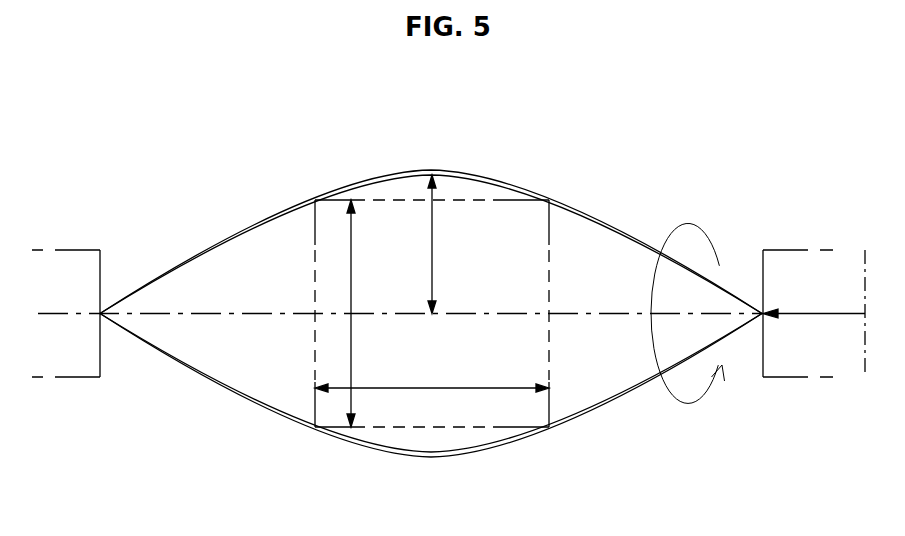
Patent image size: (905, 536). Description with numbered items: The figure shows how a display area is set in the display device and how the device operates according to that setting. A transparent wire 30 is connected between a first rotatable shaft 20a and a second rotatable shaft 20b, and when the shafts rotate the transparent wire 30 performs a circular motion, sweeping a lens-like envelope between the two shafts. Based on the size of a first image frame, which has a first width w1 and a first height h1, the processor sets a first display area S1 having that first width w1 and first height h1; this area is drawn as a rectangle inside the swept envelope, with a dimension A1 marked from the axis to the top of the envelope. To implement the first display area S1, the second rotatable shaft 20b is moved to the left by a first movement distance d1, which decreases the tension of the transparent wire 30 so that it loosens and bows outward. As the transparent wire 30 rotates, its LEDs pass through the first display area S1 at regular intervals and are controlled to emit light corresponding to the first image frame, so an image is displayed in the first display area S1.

The first rotatable shaft 20a is at (72, 257).
The second rotatable shaft 20b is at (787, 257).
The transparent wire 30 is at (383, 178).
The first display area S1 is at (425, 429).
The first height h1 is at (365, 313).
The first width w1 is at (432, 377).
The amplitude A1 is at (448, 244).
The first movement distance d1 is at (814, 313).